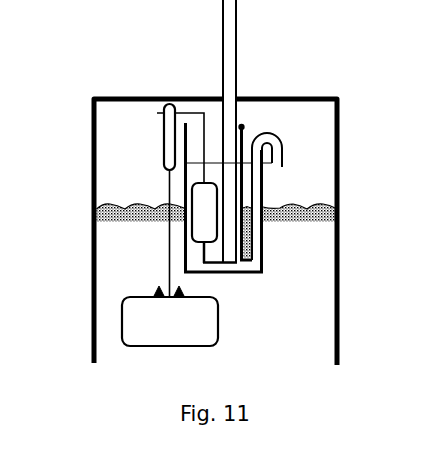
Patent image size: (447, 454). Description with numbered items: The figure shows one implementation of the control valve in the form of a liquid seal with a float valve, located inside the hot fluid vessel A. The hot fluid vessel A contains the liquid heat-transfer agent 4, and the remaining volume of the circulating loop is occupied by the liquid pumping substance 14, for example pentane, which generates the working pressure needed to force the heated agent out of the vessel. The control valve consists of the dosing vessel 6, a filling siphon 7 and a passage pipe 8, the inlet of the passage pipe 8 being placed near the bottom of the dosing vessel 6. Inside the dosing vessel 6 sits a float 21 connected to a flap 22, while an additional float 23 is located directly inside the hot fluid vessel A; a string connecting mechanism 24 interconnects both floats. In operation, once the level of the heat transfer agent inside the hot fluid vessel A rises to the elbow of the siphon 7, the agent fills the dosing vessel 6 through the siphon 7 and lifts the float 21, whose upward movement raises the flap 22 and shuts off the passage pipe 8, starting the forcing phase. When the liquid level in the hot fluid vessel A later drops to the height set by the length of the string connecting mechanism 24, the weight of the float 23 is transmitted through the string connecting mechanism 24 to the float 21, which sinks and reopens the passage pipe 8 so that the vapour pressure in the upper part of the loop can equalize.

The passage pipe 8 is at (237, 75).
The dosing vessel 6 is at (242, 128).
The filling siphon 7 is at (285, 157).
The liquid pumping substance 14 is at (323, 216).
The liquid heat-transfer agent 4 is at (325, 251).
The hot fluid vessel A is at (214, 182).
The flap 22 is at (212, 264).
The float 21 is at (195, 202).
The additional float 23 is at (119, 333).
The string connecting mechanism 24 is at (166, 135).